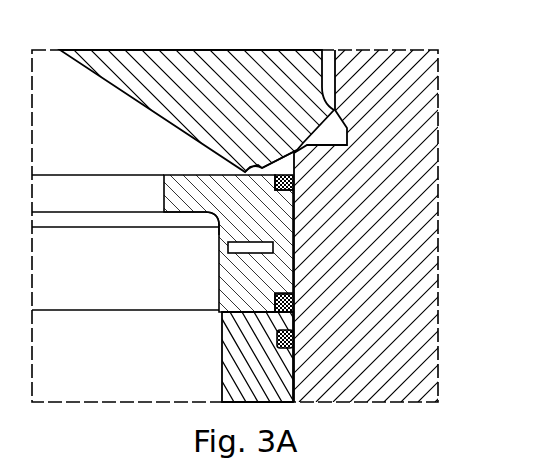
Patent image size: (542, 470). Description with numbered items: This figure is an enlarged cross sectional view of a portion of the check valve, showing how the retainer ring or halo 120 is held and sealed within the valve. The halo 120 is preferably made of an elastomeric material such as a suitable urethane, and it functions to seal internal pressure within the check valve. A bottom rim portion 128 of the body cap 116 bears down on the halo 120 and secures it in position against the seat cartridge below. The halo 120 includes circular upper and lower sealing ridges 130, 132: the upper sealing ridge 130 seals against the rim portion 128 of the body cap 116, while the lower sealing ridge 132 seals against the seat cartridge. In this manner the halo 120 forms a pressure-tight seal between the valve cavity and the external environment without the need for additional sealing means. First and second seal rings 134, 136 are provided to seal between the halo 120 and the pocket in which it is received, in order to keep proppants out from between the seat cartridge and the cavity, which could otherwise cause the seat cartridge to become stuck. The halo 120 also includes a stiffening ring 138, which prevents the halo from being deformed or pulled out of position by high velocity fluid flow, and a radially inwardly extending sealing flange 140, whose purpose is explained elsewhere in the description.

The body cap 116 is at (296, 62).
The retainer ring or halo 120 is at (297, 231).
The bottom rim portion 128 is at (294, 163).
The upper sealing ridge 130 is at (260, 166).
The lower sealing ridge 132 is at (262, 313).
The first seal ring 134 is at (294, 188).
The second seal ring 136 is at (293, 305).
The stiffening ring 138 is at (273, 247).
The sealing flange 140 is at (178, 213).